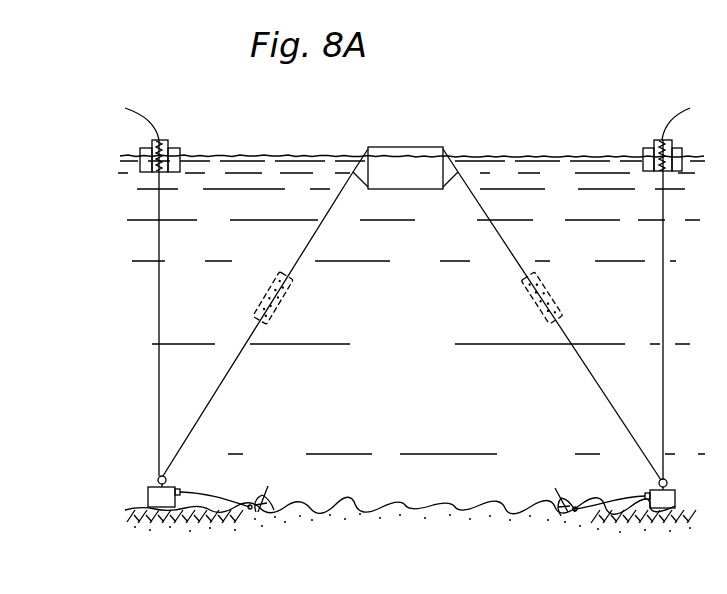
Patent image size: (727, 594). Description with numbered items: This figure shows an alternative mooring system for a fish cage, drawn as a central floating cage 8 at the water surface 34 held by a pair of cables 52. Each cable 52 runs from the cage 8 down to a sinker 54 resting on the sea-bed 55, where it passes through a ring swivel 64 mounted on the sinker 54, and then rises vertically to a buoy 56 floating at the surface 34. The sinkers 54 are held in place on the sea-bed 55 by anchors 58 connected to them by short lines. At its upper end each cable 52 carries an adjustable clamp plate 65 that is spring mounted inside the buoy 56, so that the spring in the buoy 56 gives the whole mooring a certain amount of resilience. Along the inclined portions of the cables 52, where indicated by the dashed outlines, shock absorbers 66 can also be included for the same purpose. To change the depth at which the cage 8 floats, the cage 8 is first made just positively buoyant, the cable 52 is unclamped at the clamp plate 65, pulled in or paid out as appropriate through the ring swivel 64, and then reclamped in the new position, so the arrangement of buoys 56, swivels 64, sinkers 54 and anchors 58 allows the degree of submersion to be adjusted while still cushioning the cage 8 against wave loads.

The surface buoy 8 is at (424, 146).
The water surface 34 is at (543, 155).
The cable 52 is at (160, 326).
The sinker 54 is at (175, 488).
The sea-bed 55 is at (445, 511).
The buoy 56 is at (182, 144).
The anchor 58 is at (266, 498).
The ring swivel 64 is at (156, 478).
The adjustable clamp plate 65 is at (162, 141).
The shock absorber 66 is at (262, 294).